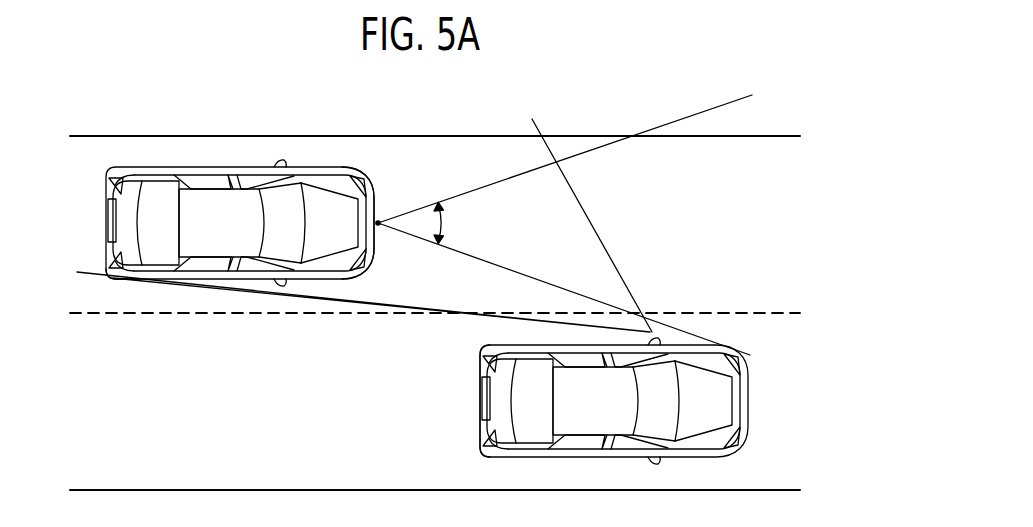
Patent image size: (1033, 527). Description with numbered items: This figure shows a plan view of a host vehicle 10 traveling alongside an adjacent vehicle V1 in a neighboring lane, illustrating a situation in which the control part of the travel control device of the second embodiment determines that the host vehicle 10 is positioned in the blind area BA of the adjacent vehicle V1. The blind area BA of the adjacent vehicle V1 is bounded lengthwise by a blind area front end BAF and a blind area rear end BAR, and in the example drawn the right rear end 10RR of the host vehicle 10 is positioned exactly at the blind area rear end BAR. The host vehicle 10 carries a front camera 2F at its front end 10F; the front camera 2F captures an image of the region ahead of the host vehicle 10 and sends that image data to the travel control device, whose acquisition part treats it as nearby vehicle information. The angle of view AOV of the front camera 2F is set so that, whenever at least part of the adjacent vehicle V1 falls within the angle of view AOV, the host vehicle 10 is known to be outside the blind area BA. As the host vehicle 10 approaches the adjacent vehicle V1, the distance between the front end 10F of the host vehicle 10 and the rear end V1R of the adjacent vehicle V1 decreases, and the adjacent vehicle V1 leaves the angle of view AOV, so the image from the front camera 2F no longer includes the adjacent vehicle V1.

The host vehicle 10 is at (235, 167).
The front end of the host vehicle 10F is at (376, 246).
The right rear end of the host vehicle 10RR is at (115, 279).
The front camera 2F is at (380, 220).
The blind area BA is at (480, 176).
The angle of view AOV is at (463, 222).
The blind area front end BAF is at (538, 128).
The blind area rear end BAR is at (88, 271).
The adjacent vehicle V1 is at (748, 397).
The rear end of the adjacent vehicle V1R is at (479, 402).